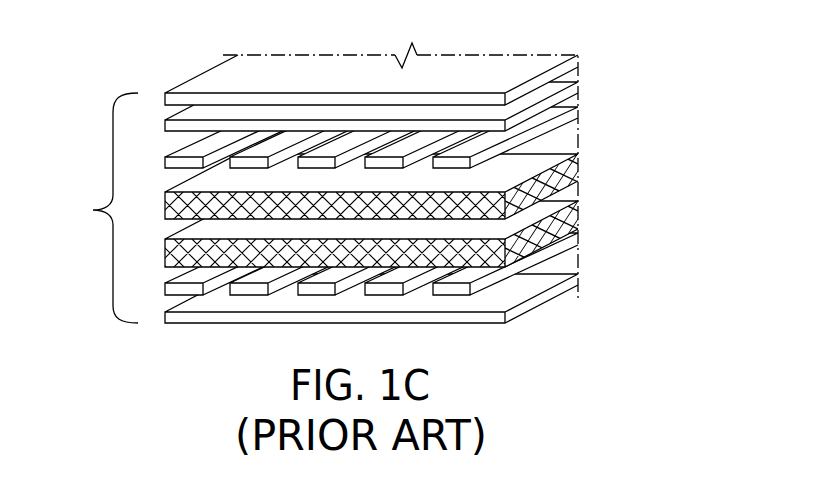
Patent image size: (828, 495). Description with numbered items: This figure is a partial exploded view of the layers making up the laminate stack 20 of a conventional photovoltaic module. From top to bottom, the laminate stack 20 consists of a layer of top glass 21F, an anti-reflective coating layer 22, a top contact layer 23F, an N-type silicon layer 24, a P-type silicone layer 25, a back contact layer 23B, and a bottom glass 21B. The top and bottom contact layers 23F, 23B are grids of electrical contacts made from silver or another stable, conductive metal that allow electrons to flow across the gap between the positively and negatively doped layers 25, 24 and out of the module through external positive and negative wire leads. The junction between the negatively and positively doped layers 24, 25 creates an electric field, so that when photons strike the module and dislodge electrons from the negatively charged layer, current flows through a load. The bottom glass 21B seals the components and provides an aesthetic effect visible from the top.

The laminate stack 20 is at (93, 210).
The top glass 21F is at (576, 62).
The anti-reflective coating layer 22 is at (578, 97).
The top contact layer 23F is at (578, 107).
The N-type silicon layer 24 is at (584, 176).
The P-type silicone layer 25 is at (578, 225).
The back contact layer 23B is at (578, 230).
The bottom glass 21B is at (578, 278).